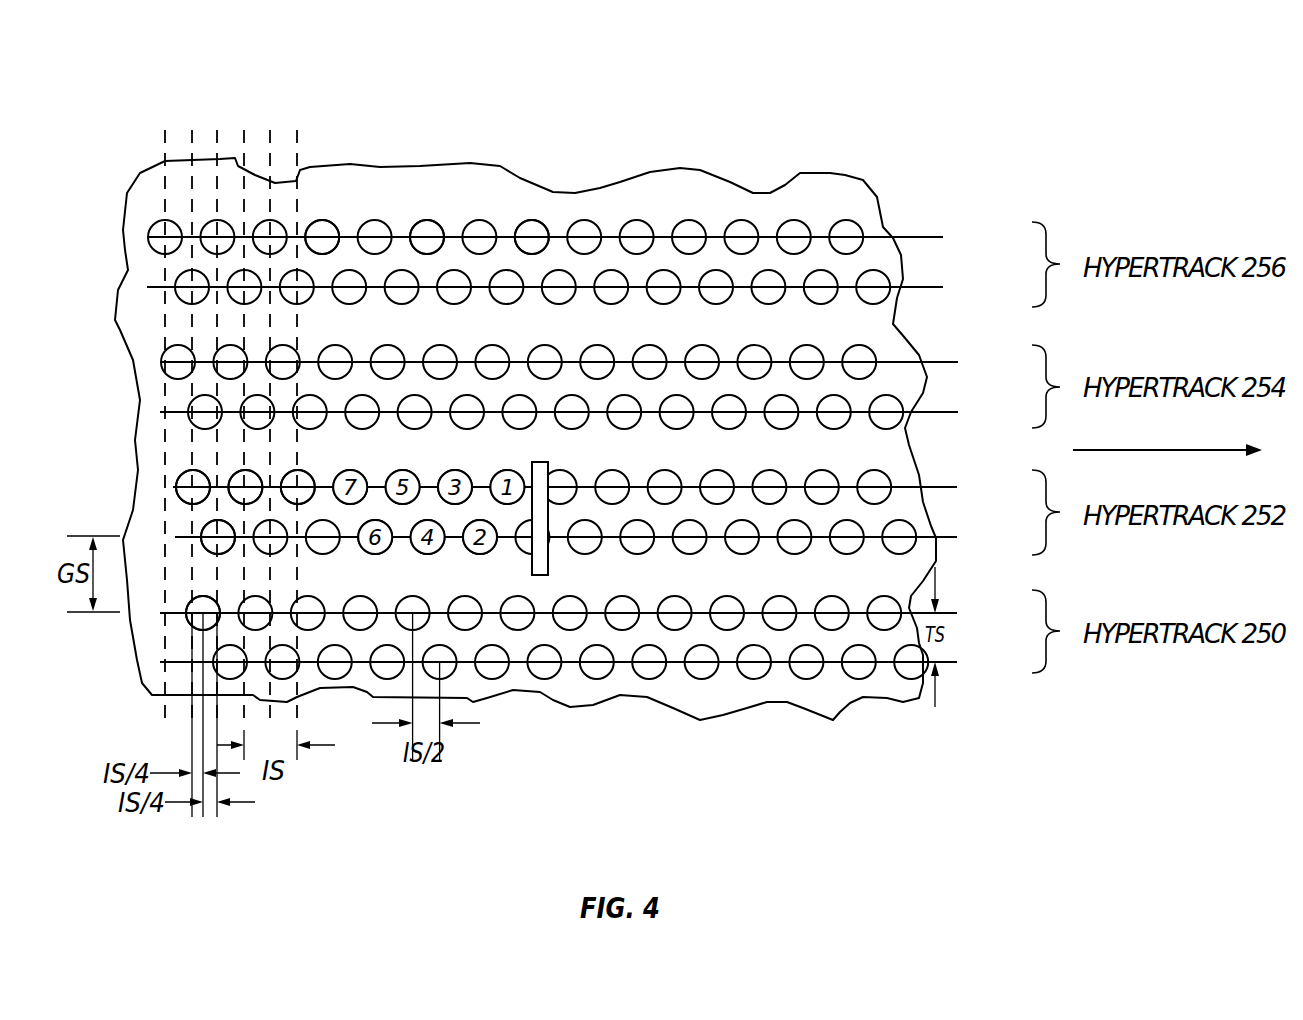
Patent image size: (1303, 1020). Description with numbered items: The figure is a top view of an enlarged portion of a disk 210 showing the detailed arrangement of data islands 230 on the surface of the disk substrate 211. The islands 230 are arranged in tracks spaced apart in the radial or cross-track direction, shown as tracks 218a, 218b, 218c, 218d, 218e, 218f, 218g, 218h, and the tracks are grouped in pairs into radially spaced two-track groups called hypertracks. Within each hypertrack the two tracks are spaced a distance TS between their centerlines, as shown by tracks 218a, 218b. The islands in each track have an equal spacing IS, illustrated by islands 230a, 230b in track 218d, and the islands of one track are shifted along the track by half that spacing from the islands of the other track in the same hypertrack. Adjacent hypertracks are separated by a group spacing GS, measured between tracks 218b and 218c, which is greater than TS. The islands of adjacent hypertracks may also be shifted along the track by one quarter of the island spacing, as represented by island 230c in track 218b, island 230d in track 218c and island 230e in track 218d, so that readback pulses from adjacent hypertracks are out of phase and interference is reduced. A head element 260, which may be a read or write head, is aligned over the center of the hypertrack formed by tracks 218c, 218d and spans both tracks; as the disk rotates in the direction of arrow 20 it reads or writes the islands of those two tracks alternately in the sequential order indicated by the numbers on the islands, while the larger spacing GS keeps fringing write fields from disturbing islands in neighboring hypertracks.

The disk 210 is at (200, 82).
The disk substrate 211 is at (716, 712).
The track 218a is at (943, 662).
The track 218b is at (943, 613).
The track 218c is at (943, 537).
The track 218d is at (943, 487).
The track 218e is at (937, 412).
The track 218f is at (937, 362).
The track 218g is at (913, 287).
The track 218h is at (913, 237).
The data islands 230 is at (322, 221).
The island 230a is at (237, 473).
The island 230b is at (308, 474).
The island 230c is at (186, 619).
The island 230d is at (224, 551).
The island 230e is at (177, 480).
The head element 260 is at (549, 464).
The arrow 20 is at (1177, 449).